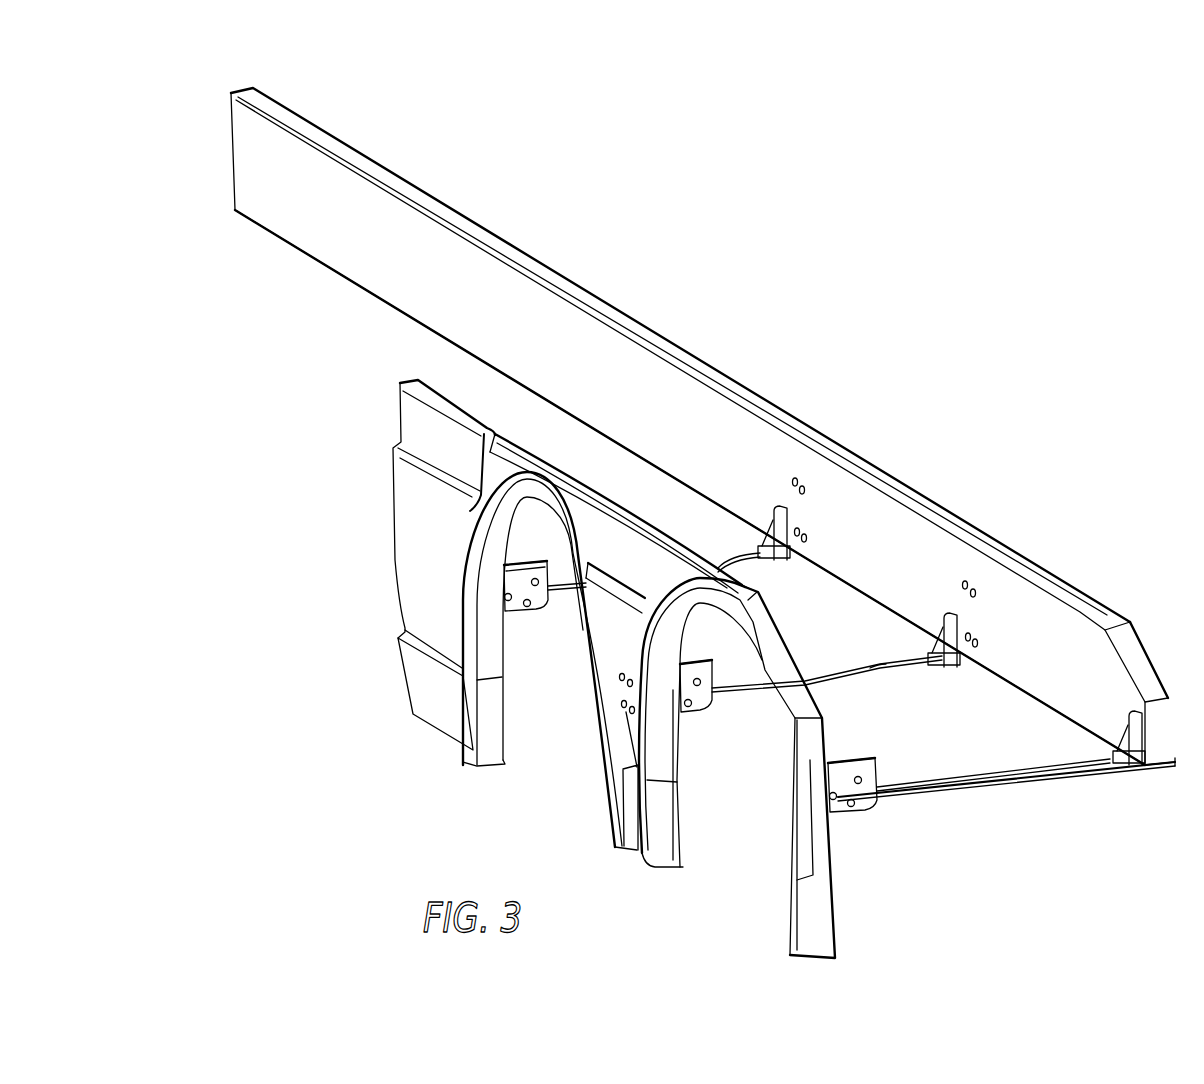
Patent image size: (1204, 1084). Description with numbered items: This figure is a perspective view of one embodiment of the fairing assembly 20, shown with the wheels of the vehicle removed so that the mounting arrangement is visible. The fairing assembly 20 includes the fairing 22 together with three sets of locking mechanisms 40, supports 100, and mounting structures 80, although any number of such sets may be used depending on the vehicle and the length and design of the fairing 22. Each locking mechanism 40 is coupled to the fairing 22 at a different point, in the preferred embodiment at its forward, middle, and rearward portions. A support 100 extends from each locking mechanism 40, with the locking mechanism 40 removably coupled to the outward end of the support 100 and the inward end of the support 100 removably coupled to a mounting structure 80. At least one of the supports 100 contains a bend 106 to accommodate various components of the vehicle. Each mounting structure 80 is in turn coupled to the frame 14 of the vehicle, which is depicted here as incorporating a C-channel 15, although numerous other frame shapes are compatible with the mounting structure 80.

The frame 14 is at (336, 120).
The C-channel 15 is at (402, 177).
The fairing assembly 20 is at (709, 878).
The fairing 22 is at (818, 920).
The locking mechanism 40 is at (520, 617).
The mounting structure 80 is at (797, 566).
The support 100 is at (726, 562).
The bend 106 is at (897, 653).